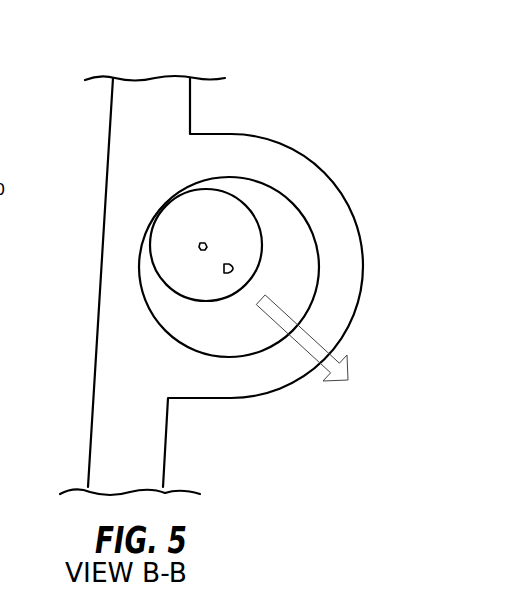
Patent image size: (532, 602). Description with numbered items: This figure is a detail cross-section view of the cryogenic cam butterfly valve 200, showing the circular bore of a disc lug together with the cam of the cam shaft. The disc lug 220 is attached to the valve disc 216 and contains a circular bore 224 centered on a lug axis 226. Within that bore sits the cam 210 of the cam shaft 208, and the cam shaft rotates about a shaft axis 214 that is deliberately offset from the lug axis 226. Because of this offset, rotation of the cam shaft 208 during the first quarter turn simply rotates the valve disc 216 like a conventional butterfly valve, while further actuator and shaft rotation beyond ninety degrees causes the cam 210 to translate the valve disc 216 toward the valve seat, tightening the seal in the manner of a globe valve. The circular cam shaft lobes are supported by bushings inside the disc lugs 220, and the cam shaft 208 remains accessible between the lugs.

The cryogenic cam butterfly valve 200 is at (84, 76).
The cam shaft 208 is at (251, 212).
The cam 210 is at (281, 280).
The shaft axis 214 is at (205, 238).
The valve disc 216 is at (92, 395).
The disc lug 220 is at (340, 283).
The circular bore 224 is at (268, 344).
The lug axis 226 is at (236, 264).